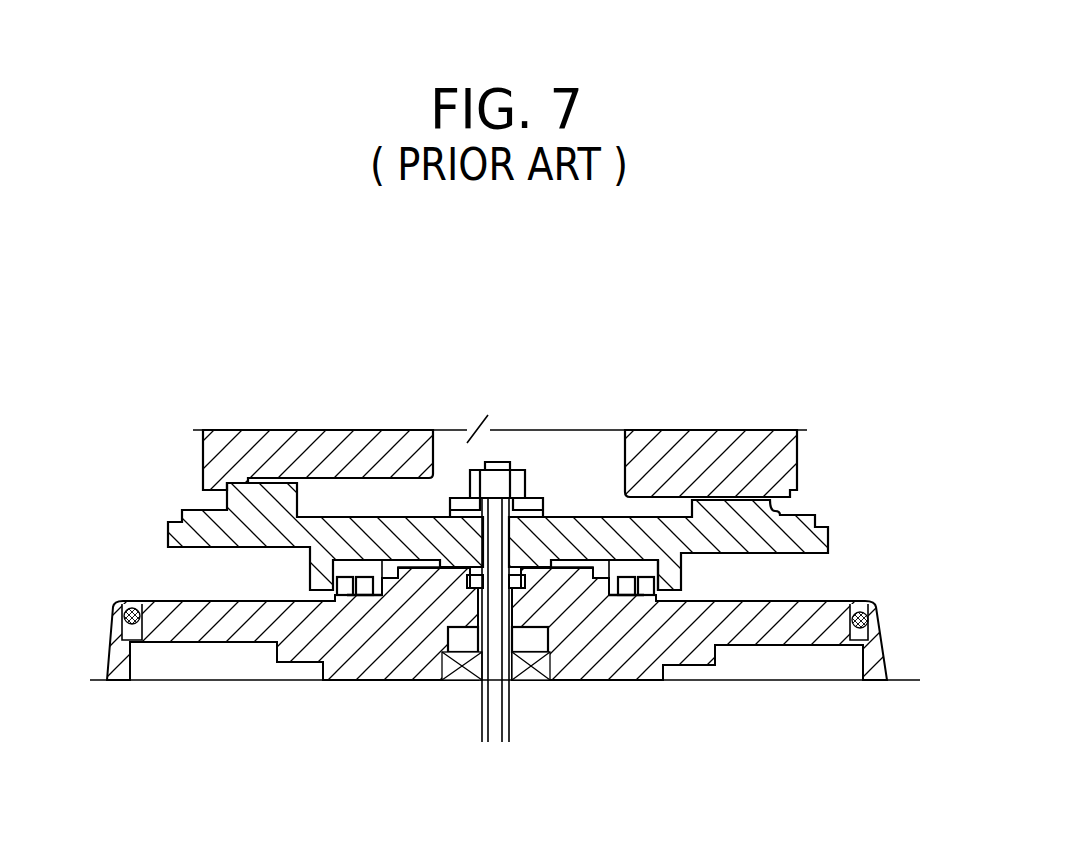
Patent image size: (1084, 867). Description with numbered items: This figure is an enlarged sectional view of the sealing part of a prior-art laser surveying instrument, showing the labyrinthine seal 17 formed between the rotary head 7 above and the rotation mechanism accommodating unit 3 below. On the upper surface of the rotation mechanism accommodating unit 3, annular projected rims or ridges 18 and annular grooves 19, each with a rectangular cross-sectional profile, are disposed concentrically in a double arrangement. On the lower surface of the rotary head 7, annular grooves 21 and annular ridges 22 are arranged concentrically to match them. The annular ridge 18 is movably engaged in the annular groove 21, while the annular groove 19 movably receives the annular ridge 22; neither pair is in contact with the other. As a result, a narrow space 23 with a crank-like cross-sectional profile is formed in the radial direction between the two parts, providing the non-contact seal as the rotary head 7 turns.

The rotary head 7 is at (345, 428).
The labyrinthine seal 17 is at (822, 493).
The annular projected rim 18 is at (650, 567).
The annular groove 19 is at (640, 572).
The rotation mechanism accommodating unit 3 is at (667, 672).
The annular groove 21 is at (362, 597).
The annular ridge 22 is at (346, 598).
The narrow space 23 is at (368, 598).